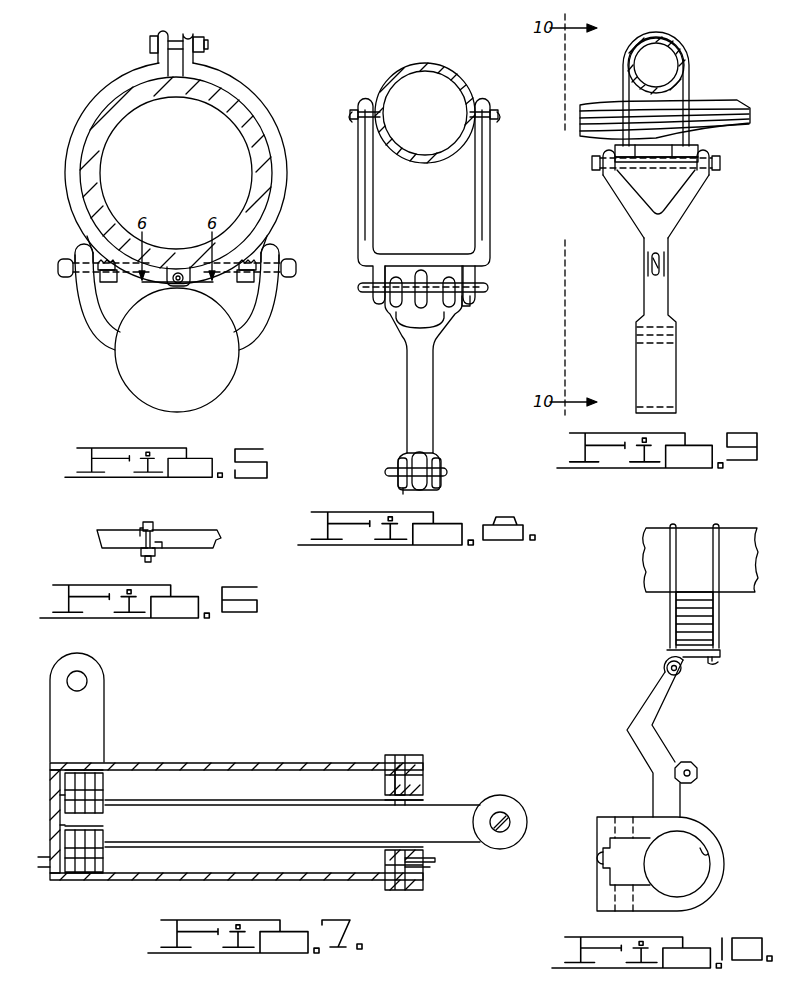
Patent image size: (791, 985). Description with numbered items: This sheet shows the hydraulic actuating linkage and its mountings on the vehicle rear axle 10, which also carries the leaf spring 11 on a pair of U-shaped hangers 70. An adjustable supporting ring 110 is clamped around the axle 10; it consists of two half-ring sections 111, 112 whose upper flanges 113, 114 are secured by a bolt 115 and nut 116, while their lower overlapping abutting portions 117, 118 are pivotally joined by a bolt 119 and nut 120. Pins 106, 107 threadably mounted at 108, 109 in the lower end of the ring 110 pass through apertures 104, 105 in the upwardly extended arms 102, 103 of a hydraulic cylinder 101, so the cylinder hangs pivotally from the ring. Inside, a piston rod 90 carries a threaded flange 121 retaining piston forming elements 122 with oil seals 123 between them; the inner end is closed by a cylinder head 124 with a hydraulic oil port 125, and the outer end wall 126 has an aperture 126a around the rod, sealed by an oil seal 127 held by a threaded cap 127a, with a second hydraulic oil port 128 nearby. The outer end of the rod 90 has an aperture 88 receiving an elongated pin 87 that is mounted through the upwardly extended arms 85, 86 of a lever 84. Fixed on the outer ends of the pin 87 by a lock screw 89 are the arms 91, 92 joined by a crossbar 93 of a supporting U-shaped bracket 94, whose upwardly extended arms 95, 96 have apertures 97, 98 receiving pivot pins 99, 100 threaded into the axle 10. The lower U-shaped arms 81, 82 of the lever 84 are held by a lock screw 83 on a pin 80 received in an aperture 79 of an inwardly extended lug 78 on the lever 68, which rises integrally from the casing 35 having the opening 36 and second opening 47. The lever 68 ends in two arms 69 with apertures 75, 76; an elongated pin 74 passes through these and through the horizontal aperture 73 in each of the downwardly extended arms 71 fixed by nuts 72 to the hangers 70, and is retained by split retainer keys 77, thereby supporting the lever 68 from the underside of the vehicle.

In FIG. 5, the vehicle rear axle 10 is at (252, 142).
In FIG. 8, the vehicle rear axle 10 is at (447, 74).
In FIG. 9, the vehicle rear axle 10 is at (690, 48).
In FIG. 10, the vehicle rear axle 10 is at (735, 536).
In FIG. 9, the leaf spring 11 is at (700, 110).
In FIG. 10, the leaf spring 11 is at (705, 612).
In FIG. 9, the casing 35 is at (636, 355).
In FIG. 10, the opening 36 is at (605, 868).
In FIG. 10, the second opening 47 is at (708, 854).
In FIG. 9, the lever 68 is at (660, 294).
In FIG. 10, the lever 68 is at (660, 748).
In FIG. 9, the arms 69 is at (622, 212).
In FIG. 9, the U-shaped hangers 70 is at (690, 68).
In FIG. 10, the U-shaped hangers 70 is at (672, 568).
In FIG. 9, the arms 71 is at (612, 174).
In FIG. 10, the arms 71 is at (667, 654).
In FIG. 10, the nuts 72 is at (718, 666).
In FIG. 9, the horizontal aperture 73 is at (656, 167).
In FIG. 9, the pin or rod 74 is at (648, 163).
In FIG. 10, the pin or rod 74 is at (667, 670).
In FIG. 9, the aperture 75 is at (612, 170).
In FIG. 9, the aperture 76 is at (708, 170).
In FIG. 9, the split retainer keys 77 is at (592, 157).
In FIG. 8, the lug 78 is at (418, 488).
In FIG. 9, the lug 78 is at (667, 262).
In FIG. 10, the lug 78 is at (697, 770).
In FIG. 8, the aperture 79 is at (404, 490).
In FIG. 9, the aperture 79 is at (650, 263).
In FIG. 10, the aperture 79 is at (693, 777).
In FIG. 8, the pin 80 is at (447, 472).
In FIG. 8, the arm 81 is at (400, 458).
In FIG. 8, the arm 82 is at (437, 462).
In FIG. 8, the lock screw 83 is at (400, 480).
In FIG. 8, the lever 84 is at (425, 373).
In FIG. 8, the arm 85 is at (452, 318).
In FIG. 8, the arm 86 is at (398, 322).
In FIG. 7, the pin 87 is at (510, 822).
In FIG. 8, the pin 87 is at (490, 288).
In FIG. 8, the aperture 88 is at (395, 308).
In FIG. 8, the lock screw 89 is at (470, 302).
In FIG. 7, the piston rod 90 is at (432, 812).
In FIG. 8, the piston rod 90 is at (430, 268).
In FIG. 8, the arm 91 is at (372, 272).
In FIG. 8, the arm 92 is at (478, 272).
In FIG. 8, the crossbar 93 is at (398, 256).
In FIG. 8, the supporting U-shaped bracket 94 is at (356, 195).
In FIG. 8, the arm 95 is at (372, 160).
In FIG. 8, the arm 96 is at (478, 160).
In FIG. 8, the aperture 97 is at (358, 118).
In FIG. 8, the aperture 98 is at (494, 120).
In FIG. 8, the pivot pin 99 is at (358, 110).
In FIG. 8, the pivot pin 100 is at (494, 118).
In FIG. 5, the hydraulic cylinder 101 is at (228, 385).
In FIG. 7, the hydraulic cylinder 101 is at (290, 763).
In FIG. 5, the arm 102 is at (95, 326).
In FIG. 5, the arm 103 is at (258, 326).
In FIG. 5, the aperture 104 is at (68, 256).
In FIG. 5, the aperture 105 is at (286, 256).
In FIG. 5, the pin 106 is at (58, 276).
In FIG. 5, the pin 107 is at (290, 276).
In FIG. 5, the threaded mounting 108 is at (110, 283).
In FIG. 5, the threaded mounting 109 is at (246, 283).
In FIG. 5, the supporting ring 110 is at (252, 78).
In FIG. 5, the half-ring section 111 is at (72, 151).
In FIG. 6, the half-ring section 111 is at (97, 536).
In FIG. 7, the half-ring section 111 is at (90, 720).
In FIG. 5, the half-ring section 112 is at (278, 153).
In FIG. 6, the half-ring section 112 is at (208, 534).
In FIG. 5, the flange 113 is at (162, 33).
In FIG. 5, the flange 114 is at (188, 30).
In FIG. 5, the bolt 115 is at (150, 44).
In FIG. 5, the nut 116 is at (206, 44).
In FIG. 6, the overlapping abutting portion 117 is at (158, 546).
In FIG. 6, the overlapping abutting portion 118 is at (140, 530).
In FIG. 5, the bolt 119 is at (178, 284).
In FIG. 6, the bolt 119 is at (152, 527).
In FIG. 6, the nut 120 is at (144, 554).
In FIG. 7, the flange 121 is at (68, 838).
In FIG. 7, the piston forming elements 122 is at (105, 792).
In FIG. 7, the oil seals 123 is at (105, 768).
In FIG. 7, the cylinder head 124 is at (58, 795).
In FIG. 7, the hydraulic oil port 125 is at (40, 867).
In FIG. 7, the cylinder end wall 126 is at (392, 784).
In FIG. 7, the aperture 126a is at (398, 806).
In FIG. 7, the oil seal 127 is at (425, 850).
In FIG. 7, the cap 127a is at (418, 778).
In FIG. 7, the hydraulic oil port 128 is at (433, 868).